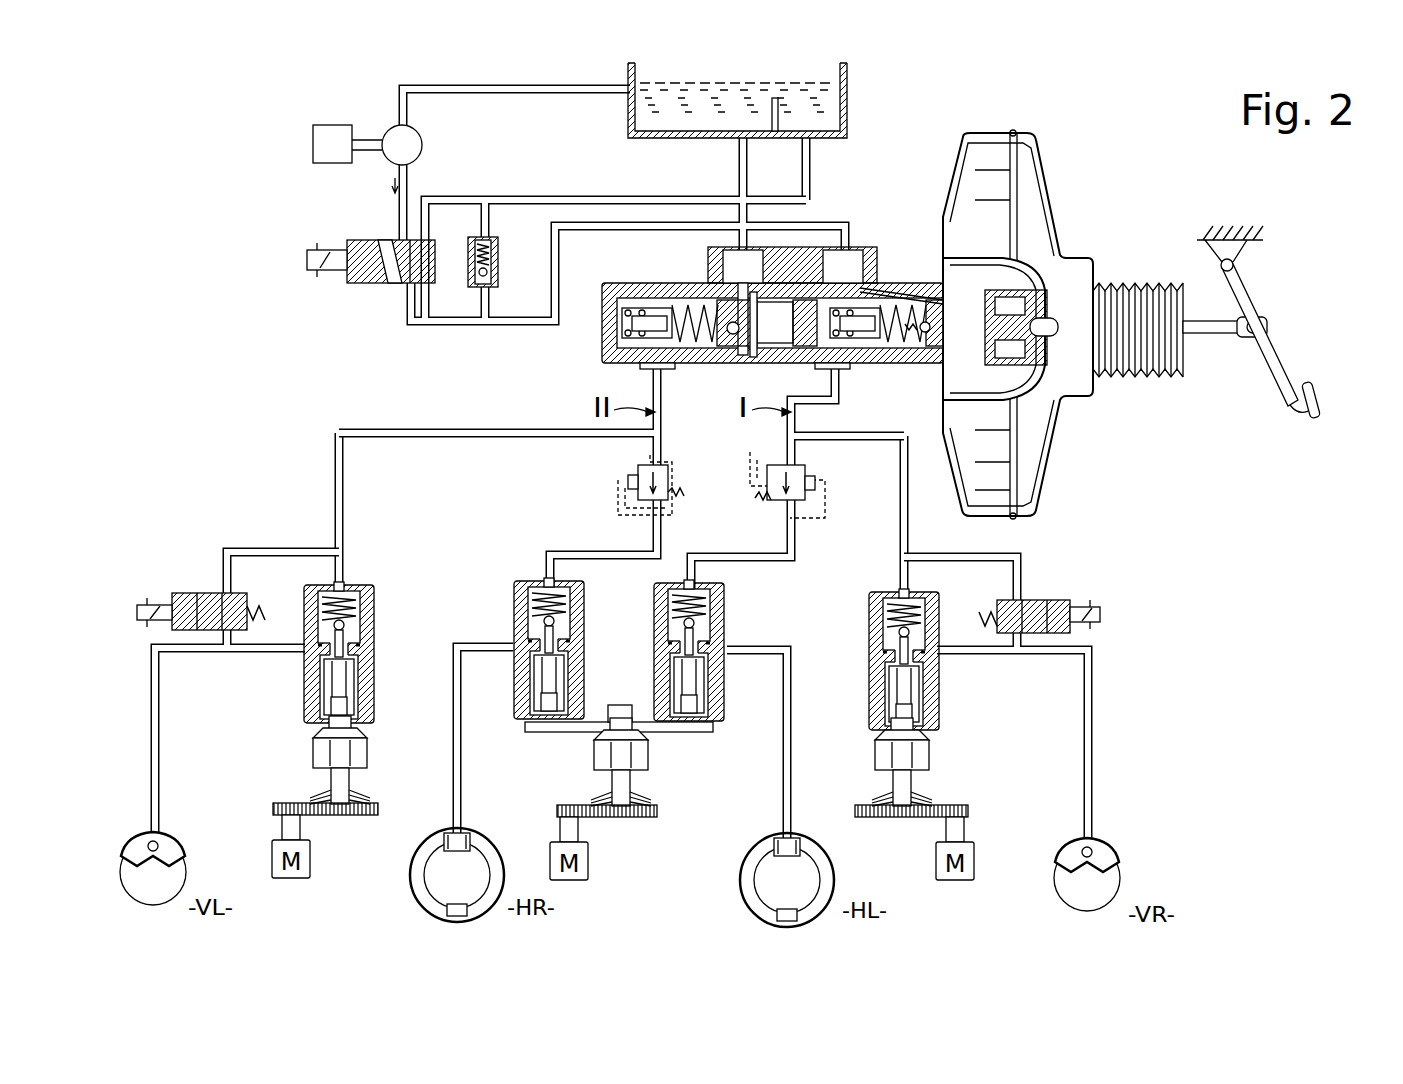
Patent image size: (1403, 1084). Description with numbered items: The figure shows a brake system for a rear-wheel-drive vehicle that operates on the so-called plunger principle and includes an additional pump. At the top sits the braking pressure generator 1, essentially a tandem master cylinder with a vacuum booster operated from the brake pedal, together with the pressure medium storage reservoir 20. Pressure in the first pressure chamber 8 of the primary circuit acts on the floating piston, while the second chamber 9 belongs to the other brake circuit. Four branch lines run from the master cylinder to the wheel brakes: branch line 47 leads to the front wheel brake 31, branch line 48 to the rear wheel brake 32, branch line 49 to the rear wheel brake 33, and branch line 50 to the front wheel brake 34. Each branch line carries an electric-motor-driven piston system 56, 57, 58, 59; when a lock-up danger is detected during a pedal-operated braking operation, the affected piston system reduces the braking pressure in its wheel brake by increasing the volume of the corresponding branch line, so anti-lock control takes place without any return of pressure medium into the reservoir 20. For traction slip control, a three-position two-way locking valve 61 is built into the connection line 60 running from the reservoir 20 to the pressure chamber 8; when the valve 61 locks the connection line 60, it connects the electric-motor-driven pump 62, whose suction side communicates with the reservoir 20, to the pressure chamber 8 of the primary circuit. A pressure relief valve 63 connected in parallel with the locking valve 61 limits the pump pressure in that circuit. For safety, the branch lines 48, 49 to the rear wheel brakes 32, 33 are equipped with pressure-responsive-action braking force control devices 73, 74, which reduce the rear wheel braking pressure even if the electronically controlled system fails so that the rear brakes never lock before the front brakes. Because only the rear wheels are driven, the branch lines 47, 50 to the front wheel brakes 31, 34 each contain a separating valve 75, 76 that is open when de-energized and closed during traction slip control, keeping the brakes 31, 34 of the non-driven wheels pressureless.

The braking pressure generator 1 is at (772, 277).
The first pressure chamber 8 is at (889, 340).
The second piston 9 is at (686, 340).
The pressure medium storage reservoir 20 is at (848, 88).
The front wheel brake 31 is at (1072, 852).
The rear wheel brake 32 is at (748, 852).
The rear wheel brake 33 is at (418, 858).
The front wheel brake 34 is at (172, 848).
The branch line 47 is at (903, 527).
The branch line 48 is at (742, 553).
The branch line 49 is at (595, 552).
The branch line 50 is at (343, 512).
The electric-motor-driven piston system 56 is at (868, 658).
The electric-motor-driven piston system 57 is at (724, 673).
The electric-motor-driven piston system 58 is at (530, 676).
The electric-motor-driven piston system 59 is at (374, 648).
The connection line 60 is at (807, 175).
The 3/2-way valve 61 is at (393, 284).
The electric-motor-driven pump 62 is at (415, 148).
The pressure relief valve 63 is at (498, 262).
The pressure-responsive-action braking force control device 73 is at (805, 468).
The pressure-responsive-action braking force control device 74 is at (640, 467).
The separating valve 75 is at (1023, 598).
The separating valve 76 is at (200, 592).